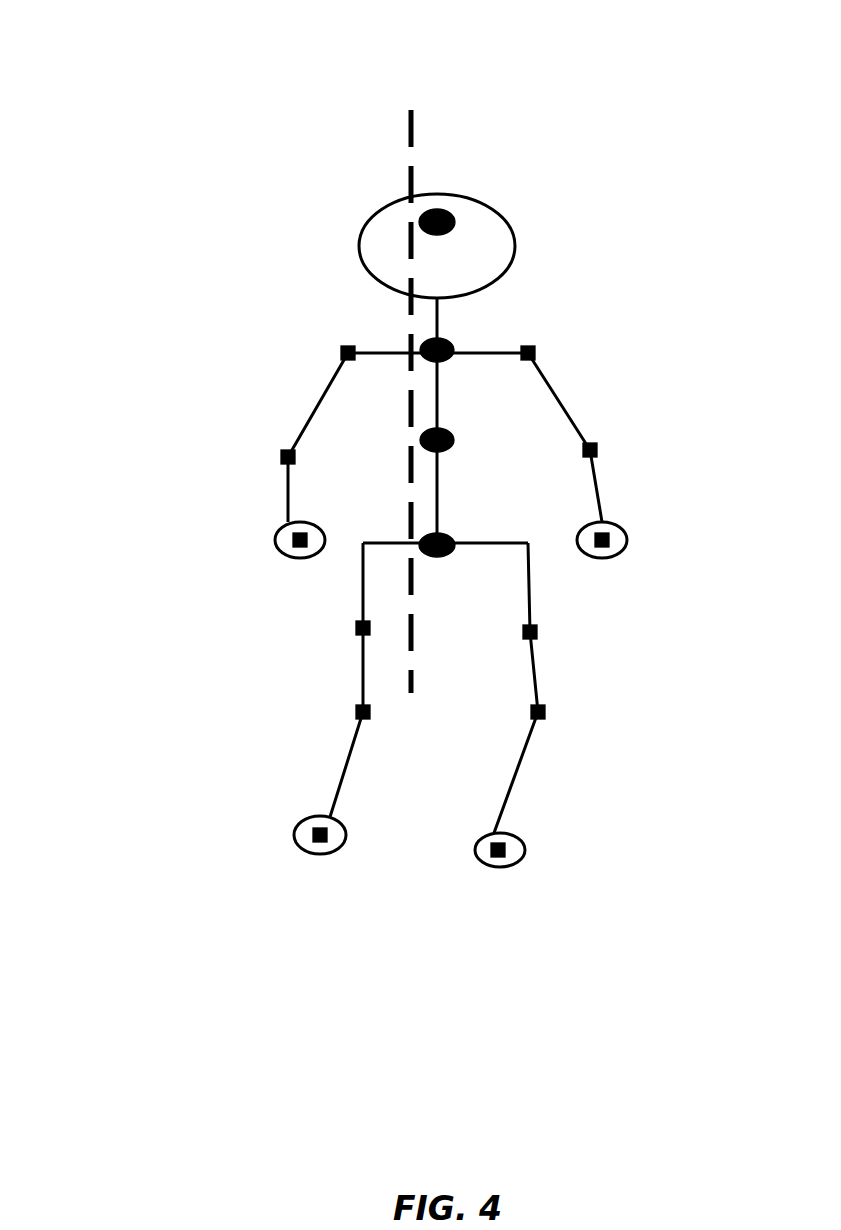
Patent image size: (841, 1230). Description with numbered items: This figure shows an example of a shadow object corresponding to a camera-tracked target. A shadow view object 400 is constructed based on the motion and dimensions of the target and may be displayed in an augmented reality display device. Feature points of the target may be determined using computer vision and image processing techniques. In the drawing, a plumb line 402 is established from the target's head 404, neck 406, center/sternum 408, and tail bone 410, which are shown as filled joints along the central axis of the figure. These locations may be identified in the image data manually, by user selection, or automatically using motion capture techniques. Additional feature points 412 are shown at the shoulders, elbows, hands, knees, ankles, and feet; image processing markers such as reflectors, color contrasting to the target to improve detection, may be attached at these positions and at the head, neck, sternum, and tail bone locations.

The shadow view object 400 is at (160, 96).
The plumb line 402 is at (408, 120).
The head 404 is at (448, 216).
The neck 406 is at (451, 344).
The center/sternum 408 is at (451, 434).
The tail bone 410 is at (451, 538).
The feature points 412 is at (341, 353).